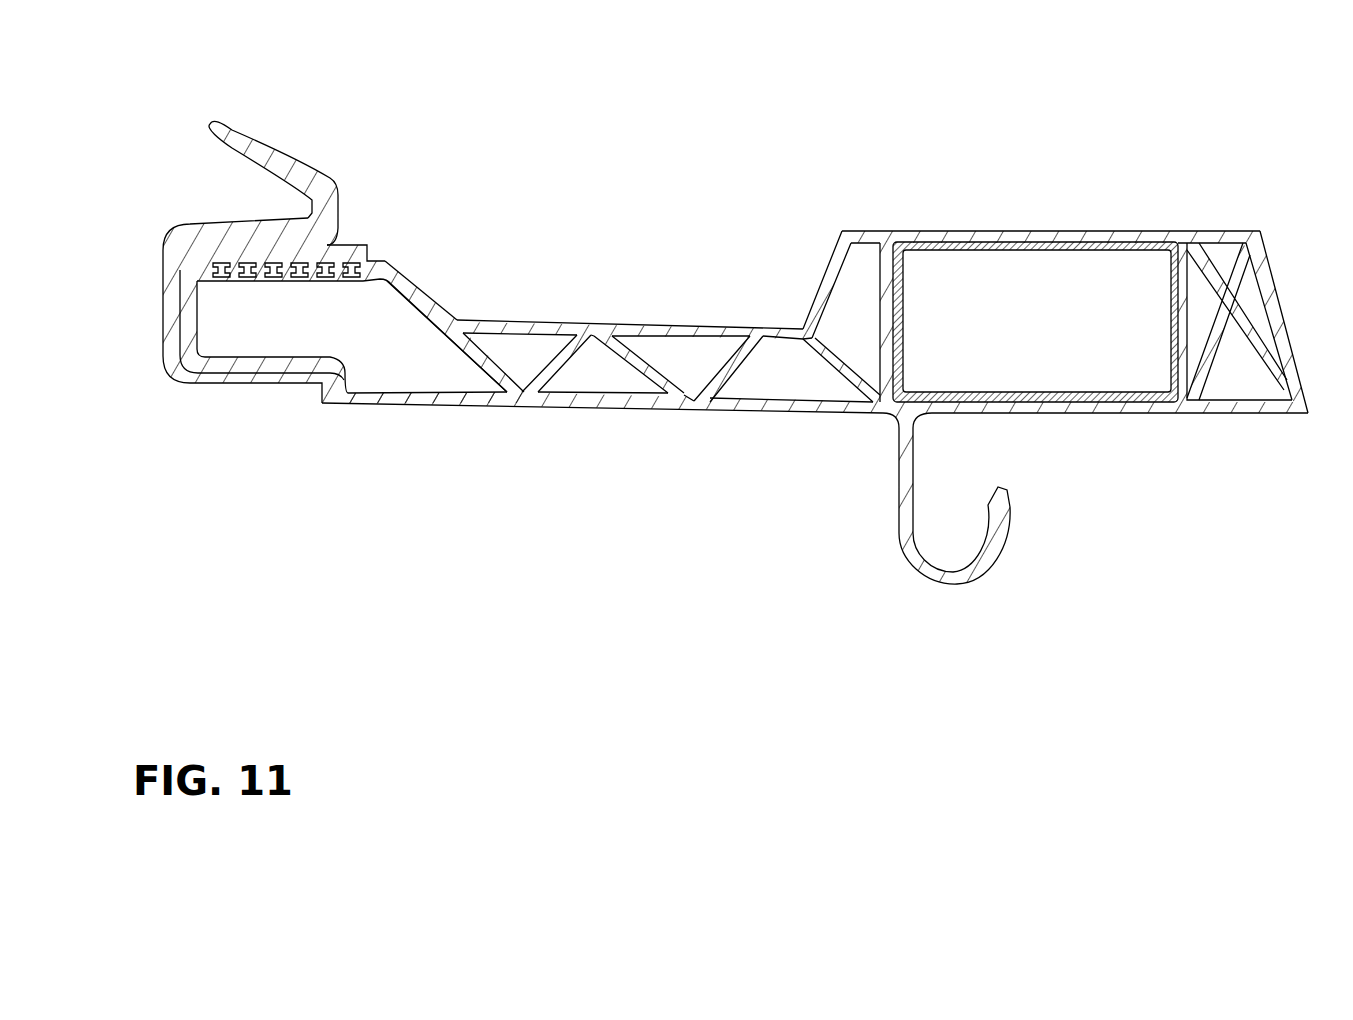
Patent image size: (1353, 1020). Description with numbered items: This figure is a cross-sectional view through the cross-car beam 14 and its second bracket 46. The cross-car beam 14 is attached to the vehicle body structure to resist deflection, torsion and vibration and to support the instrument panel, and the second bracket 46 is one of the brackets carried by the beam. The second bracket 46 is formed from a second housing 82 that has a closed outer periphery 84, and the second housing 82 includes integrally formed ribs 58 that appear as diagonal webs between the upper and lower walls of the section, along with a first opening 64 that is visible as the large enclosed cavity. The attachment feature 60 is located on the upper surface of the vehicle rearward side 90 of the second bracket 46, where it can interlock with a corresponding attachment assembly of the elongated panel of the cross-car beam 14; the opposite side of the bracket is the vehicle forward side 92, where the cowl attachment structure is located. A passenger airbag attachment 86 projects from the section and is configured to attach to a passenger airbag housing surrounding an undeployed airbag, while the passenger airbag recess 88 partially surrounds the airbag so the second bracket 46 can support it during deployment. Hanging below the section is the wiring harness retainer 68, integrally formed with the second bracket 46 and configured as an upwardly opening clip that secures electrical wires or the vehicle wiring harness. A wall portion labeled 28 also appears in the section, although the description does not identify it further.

The cross-car beam 14 is at (200, 388).
The support wall 28 is at (1140, 240).
The second bracket 46 is at (1273, 413).
The ribs 58 is at (553, 352).
The attachment feature 60 is at (340, 247).
The first opening 64 is at (986, 288).
The wiring harness retainer 68 is at (957, 584).
The second housing 82 is at (877, 236).
The closed outer periphery 84 is at (1217, 220).
The passenger airbag attachment 86 is at (320, 158).
The passenger airbag recess 88 is at (686, 305).
The vehicle rearward side 90 is at (170, 320).
The vehicle forward side 92 is at (1280, 277).